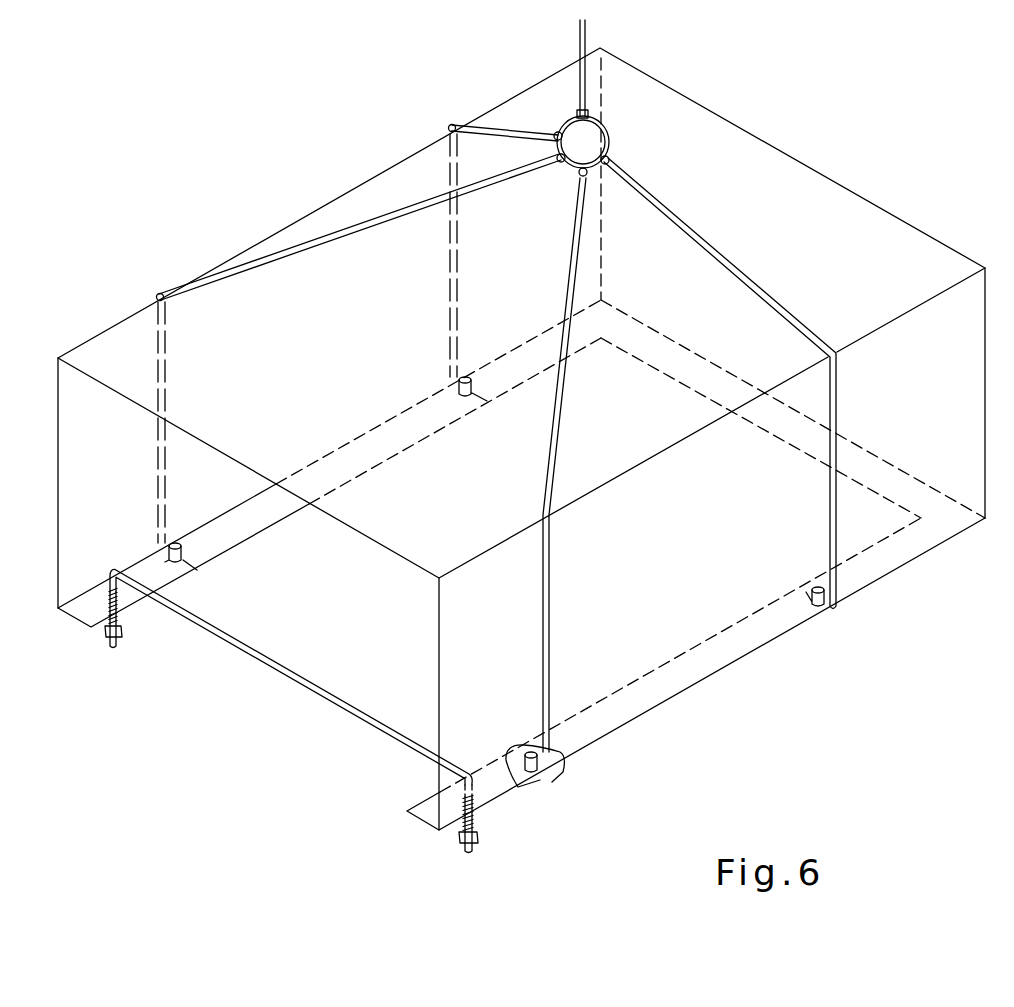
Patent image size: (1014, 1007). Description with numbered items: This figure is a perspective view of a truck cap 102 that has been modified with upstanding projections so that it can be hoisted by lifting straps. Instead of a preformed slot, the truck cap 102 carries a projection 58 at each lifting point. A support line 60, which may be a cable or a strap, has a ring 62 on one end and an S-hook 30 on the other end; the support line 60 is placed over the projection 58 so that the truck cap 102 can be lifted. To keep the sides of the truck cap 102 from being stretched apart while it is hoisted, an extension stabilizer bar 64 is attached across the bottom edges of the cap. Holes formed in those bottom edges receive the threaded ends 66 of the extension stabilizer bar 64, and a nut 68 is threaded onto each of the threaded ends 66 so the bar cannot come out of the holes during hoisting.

The truck cap 102 is at (782, 150).
The S-hook 30 is at (606, 162).
The support line 60 is at (550, 685).
The projection 58 is at (508, 756).
The ring 62 is at (532, 772).
The extension stabilizer bar 64 is at (305, 688).
The threaded ends 66 is at (112, 640).
The nut 68 is at (122, 638).